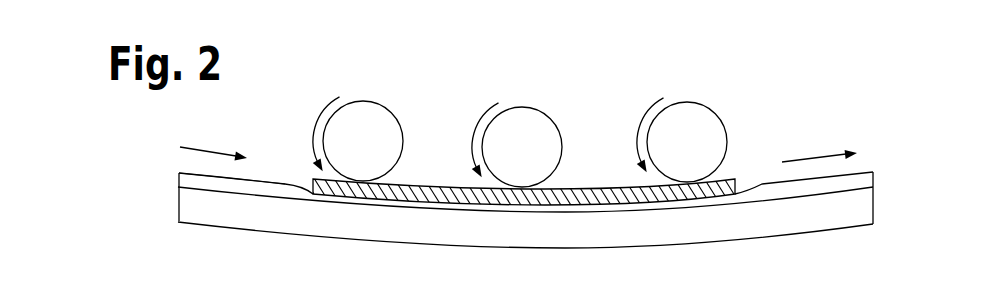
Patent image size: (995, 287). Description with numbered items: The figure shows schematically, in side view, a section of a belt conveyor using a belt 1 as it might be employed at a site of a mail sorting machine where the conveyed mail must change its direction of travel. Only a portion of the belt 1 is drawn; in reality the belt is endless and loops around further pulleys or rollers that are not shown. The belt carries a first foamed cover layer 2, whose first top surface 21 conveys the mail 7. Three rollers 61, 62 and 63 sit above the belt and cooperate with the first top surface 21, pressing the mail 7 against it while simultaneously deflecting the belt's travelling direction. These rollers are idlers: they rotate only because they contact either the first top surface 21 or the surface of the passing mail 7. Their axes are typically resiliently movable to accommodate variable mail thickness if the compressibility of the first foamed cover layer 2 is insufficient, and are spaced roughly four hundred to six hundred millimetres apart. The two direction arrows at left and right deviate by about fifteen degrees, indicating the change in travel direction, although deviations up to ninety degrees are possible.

The belt 1 is at (156, 200).
The first foamed cover layer 2 is at (178, 172).
The first top surface 21 is at (253, 171).
The mail 7 is at (733, 180).
The roller 61 is at (373, 132).
The roller 62 is at (522, 138).
The roller 63 is at (680, 130).